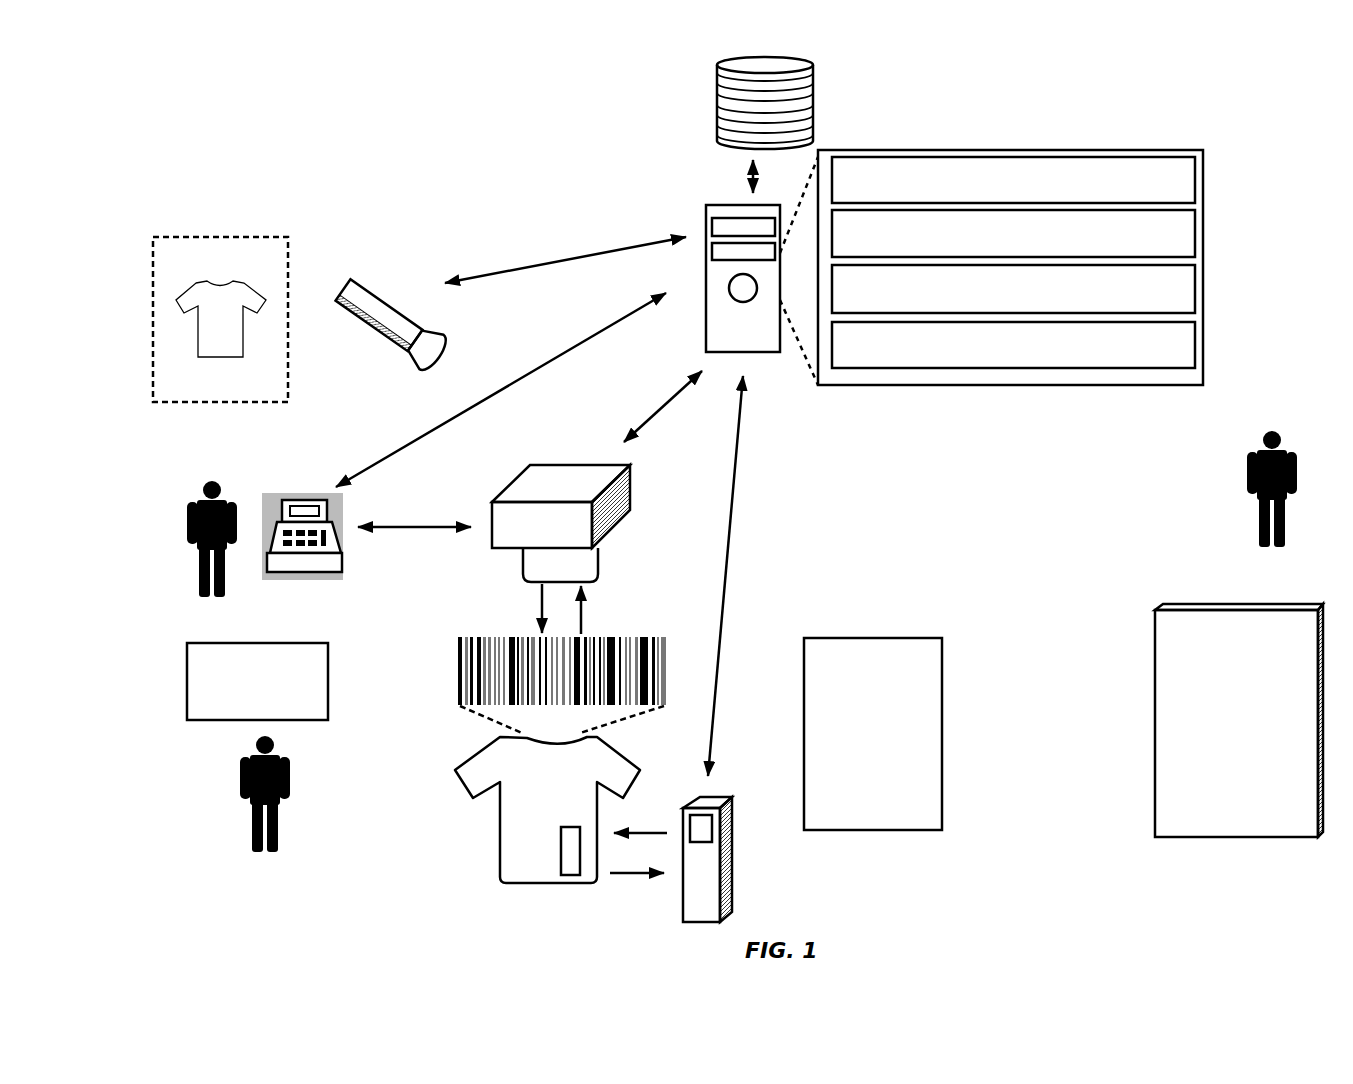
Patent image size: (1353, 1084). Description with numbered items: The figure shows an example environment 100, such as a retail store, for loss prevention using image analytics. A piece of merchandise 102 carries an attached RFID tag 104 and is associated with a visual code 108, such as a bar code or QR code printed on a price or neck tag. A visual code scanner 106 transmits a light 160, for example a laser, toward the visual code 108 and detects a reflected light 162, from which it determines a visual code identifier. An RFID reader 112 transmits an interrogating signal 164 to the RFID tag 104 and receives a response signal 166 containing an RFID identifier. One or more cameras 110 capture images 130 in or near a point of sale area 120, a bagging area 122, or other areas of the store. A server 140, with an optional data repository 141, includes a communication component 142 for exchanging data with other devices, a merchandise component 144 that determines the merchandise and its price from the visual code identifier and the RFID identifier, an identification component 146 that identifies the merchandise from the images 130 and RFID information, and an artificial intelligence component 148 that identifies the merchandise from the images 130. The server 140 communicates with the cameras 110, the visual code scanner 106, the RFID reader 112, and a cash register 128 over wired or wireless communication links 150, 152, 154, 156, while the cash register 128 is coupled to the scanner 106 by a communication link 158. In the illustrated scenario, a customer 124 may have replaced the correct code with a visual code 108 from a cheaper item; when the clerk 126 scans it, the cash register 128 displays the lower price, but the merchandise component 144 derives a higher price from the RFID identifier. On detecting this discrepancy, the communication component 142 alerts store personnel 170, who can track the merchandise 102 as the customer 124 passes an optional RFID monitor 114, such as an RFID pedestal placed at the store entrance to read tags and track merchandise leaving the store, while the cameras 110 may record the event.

The environment 100 is at (157, 105).
The merchandise 102 is at (500, 875).
The RFID tag 104 is at (563, 872).
The visual code scanner 106 is at (568, 465).
The visual code 108 is at (460, 632).
The cameras 110 is at (355, 262).
The RFID reader 112 is at (733, 837).
The RFID monitor 114 is at (1207, 604).
The point of sale (POS) area 120 is at (213, 643).
The bagging area 122 is at (930, 638).
The customer 124 is at (245, 790).
The clerk 126 is at (190, 530).
The cash register 128 is at (303, 497).
The images 130 is at (213, 237).
The server 140 is at (706, 205).
The data repository 141 is at (815, 112).
The communication component 142 is at (1013, 180).
The merchandise component 144 is at (1013, 233).
The identification component 146 is at (1013, 289).
The artificial intelligence (AI) component 148 is at (1013, 345).
The communication link 150 is at (535, 266).
The communication link 152 is at (648, 425).
The communication link 154 is at (733, 487).
The communication link 156 is at (396, 445).
The communication link 158 is at (440, 523).
The light 160 is at (542, 614).
The reflected light 162 is at (581, 618).
The interrogating signal 164 is at (648, 832).
The response signal 166 is at (633, 876).
The store personnel 170 is at (1250, 483).